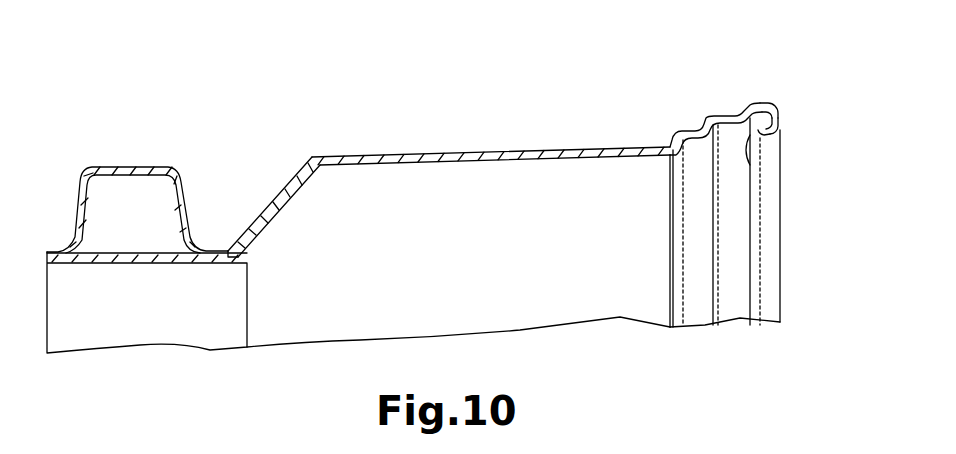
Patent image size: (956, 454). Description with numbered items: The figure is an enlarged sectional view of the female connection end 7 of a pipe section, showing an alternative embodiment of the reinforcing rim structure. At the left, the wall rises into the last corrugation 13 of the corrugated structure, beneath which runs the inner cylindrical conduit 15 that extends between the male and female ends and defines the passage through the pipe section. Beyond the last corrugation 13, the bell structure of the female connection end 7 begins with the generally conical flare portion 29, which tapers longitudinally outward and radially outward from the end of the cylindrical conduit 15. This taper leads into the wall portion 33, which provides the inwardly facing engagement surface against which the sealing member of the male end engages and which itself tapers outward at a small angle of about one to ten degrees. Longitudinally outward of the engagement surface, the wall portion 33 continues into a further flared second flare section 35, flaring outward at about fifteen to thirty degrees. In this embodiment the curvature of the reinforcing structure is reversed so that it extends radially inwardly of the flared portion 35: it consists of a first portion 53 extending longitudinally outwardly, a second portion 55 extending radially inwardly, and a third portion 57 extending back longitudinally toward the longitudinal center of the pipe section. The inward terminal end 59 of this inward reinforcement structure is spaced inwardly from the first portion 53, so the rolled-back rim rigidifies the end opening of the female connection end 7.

The female connection end 7 is at (505, 132).
The corrugation 13 is at (135, 163).
The cylindrical conduit 15 is at (145, 262).
The conical flare portion 29 is at (287, 203).
The wall portion 33 is at (447, 158).
The second flare section 35 is at (732, 120).
The first portion 53 is at (763, 105).
The second portion 55 is at (782, 118).
The third portion 57 is at (760, 135).
The inward terminal end 59 is at (752, 163).